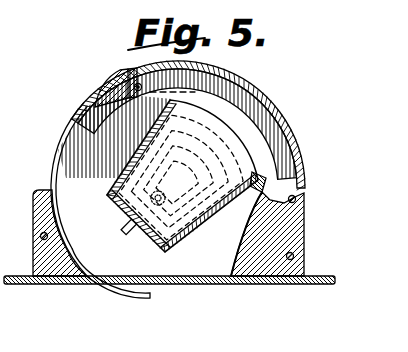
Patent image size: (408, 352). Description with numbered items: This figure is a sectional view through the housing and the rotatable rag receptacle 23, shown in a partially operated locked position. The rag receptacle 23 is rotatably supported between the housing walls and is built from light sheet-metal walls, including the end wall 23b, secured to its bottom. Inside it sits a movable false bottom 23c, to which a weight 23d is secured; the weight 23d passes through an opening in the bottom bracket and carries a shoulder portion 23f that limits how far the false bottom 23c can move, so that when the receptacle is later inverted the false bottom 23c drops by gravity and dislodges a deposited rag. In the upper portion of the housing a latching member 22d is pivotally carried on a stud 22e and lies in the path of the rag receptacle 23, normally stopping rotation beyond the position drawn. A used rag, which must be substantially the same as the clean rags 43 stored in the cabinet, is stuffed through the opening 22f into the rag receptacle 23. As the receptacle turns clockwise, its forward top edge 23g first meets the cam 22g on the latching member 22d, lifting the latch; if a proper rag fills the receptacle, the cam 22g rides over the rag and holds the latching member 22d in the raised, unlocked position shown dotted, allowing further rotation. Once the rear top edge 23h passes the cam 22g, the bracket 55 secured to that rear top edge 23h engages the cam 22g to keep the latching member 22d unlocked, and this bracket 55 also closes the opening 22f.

The latching member 22d is at (294, 186).
The stud 22e is at (136, 78).
The opening 22f is at (58, 150).
The cam 22g is at (195, 120).
The rag receptacle 23 is at (180, 248).
The end wall 23b is at (200, 226).
The false bottom 23c is at (228, 250).
The weight 23d is at (122, 231).
The shoulder portion 23f is at (131, 229).
The forward top edge 23g is at (214, 207).
The rear top edge 23h is at (150, 130).
The clean rag 43 is at (108, 199).
The bracket 55 is at (114, 283).